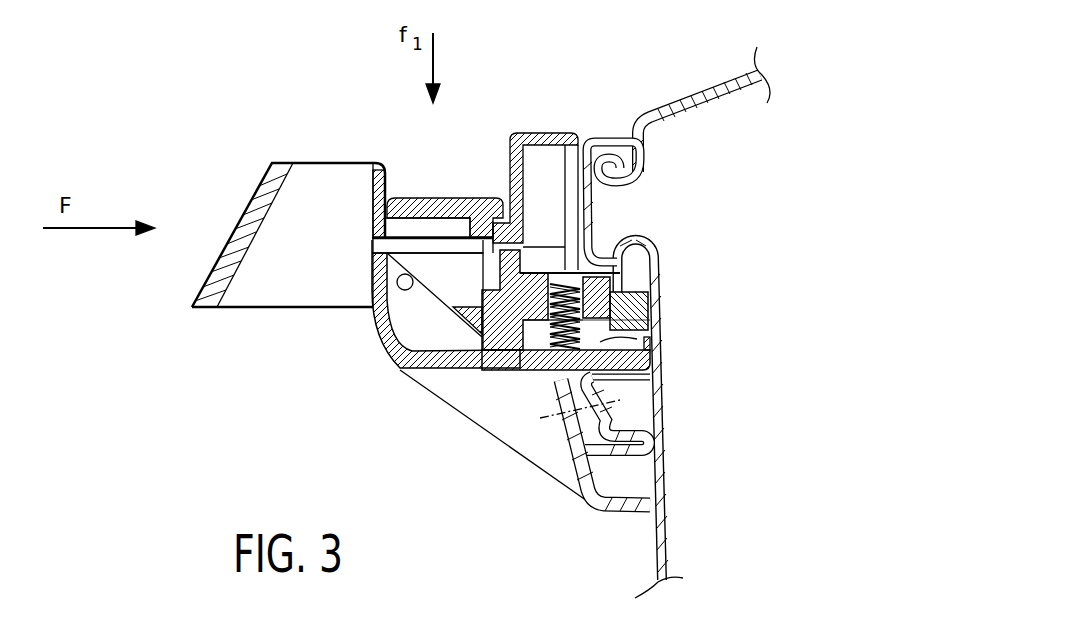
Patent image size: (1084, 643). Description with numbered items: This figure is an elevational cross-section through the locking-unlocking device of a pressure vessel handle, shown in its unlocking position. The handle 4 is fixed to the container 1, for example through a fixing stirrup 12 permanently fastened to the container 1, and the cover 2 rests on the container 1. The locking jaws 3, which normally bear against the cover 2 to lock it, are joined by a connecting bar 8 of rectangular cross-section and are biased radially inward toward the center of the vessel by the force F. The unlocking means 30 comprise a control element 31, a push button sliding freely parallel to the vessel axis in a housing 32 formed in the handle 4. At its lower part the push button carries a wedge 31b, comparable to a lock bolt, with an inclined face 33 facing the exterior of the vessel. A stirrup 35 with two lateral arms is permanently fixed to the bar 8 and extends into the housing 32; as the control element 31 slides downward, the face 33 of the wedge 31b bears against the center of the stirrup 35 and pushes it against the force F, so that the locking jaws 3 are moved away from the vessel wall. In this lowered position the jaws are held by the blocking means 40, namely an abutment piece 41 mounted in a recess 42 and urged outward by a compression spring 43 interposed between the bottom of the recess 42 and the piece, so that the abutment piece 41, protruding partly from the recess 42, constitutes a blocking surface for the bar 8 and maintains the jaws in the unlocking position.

The container 1 is at (665, 545).
The cover 2 is at (690, 95).
The locking jaws 3 is at (622, 152).
The handle 4 is at (310, 113).
The connecting bar 8 is at (513, 300).
The fixing stirrup 12 is at (623, 430).
The unlocking means 30 is at (442, 198).
The control element 31 is at (408, 197).
The wedge 31b is at (458, 273).
The housing 32 is at (430, 340).
The inclined face 33 is at (433, 333).
The stirrup 35 is at (396, 289).
The blocking means 40 is at (602, 256).
The abutment piece 41 is at (650, 310).
The recess 42 is at (650, 350).
The compression spring 43 is at (560, 337).